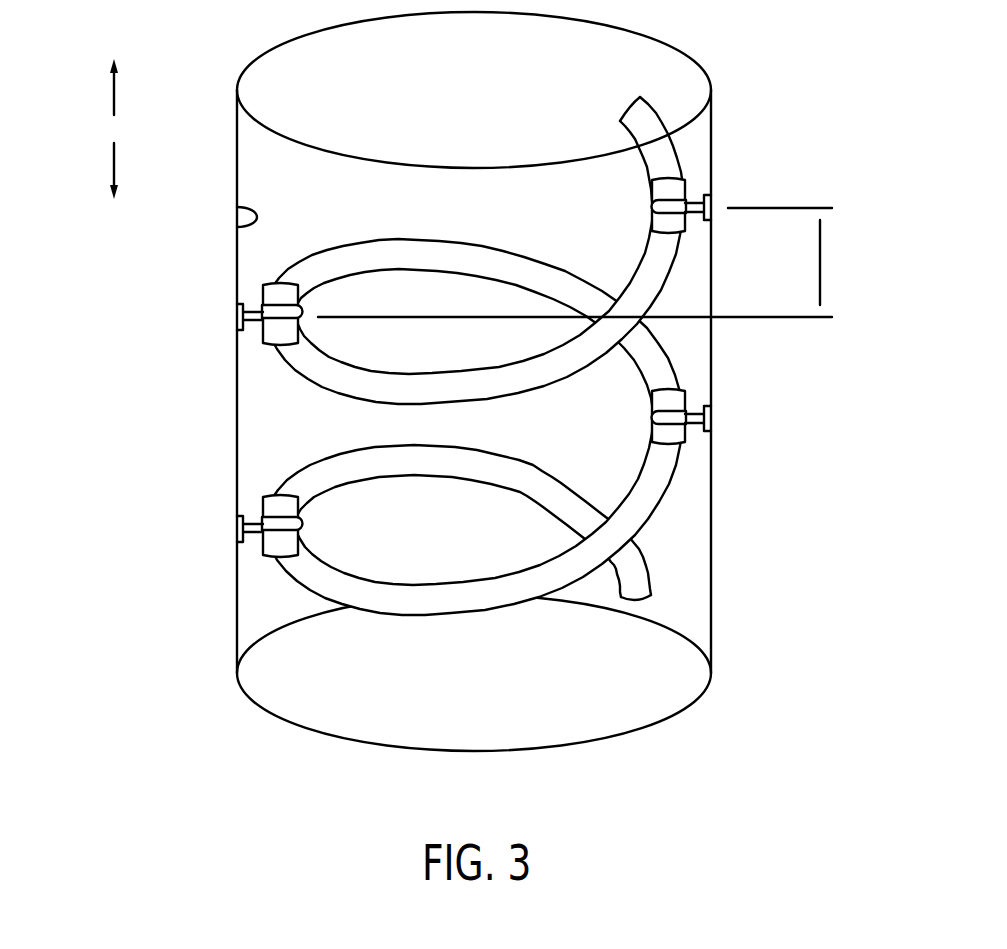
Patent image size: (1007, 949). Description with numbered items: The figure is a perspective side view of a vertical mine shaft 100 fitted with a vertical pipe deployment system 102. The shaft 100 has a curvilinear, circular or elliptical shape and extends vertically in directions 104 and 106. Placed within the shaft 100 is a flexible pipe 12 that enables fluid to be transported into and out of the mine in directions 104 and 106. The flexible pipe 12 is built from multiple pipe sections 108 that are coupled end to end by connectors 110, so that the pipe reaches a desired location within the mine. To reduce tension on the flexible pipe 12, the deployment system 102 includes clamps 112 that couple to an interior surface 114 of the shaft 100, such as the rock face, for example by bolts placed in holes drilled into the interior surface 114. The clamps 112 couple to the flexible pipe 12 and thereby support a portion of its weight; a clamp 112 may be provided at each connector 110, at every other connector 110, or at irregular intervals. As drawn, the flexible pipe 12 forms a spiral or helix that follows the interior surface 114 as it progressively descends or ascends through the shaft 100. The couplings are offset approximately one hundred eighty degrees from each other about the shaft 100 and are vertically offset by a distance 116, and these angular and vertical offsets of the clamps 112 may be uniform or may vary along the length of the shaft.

The flexible pipe 12 is at (339, 707).
The vertical mine shaft 100 is at (237, 450).
The vertical pipe deployment system 102 is at (760, 90).
The direction 104 is at (114, 165).
The direction 106 is at (114, 95).
The pipe section 108 is at (433, 255).
The connector 110 is at (268, 330).
The clamp 112 is at (208, 307).
The interior surface 114 is at (252, 220).
The distance 116 is at (579, 262).